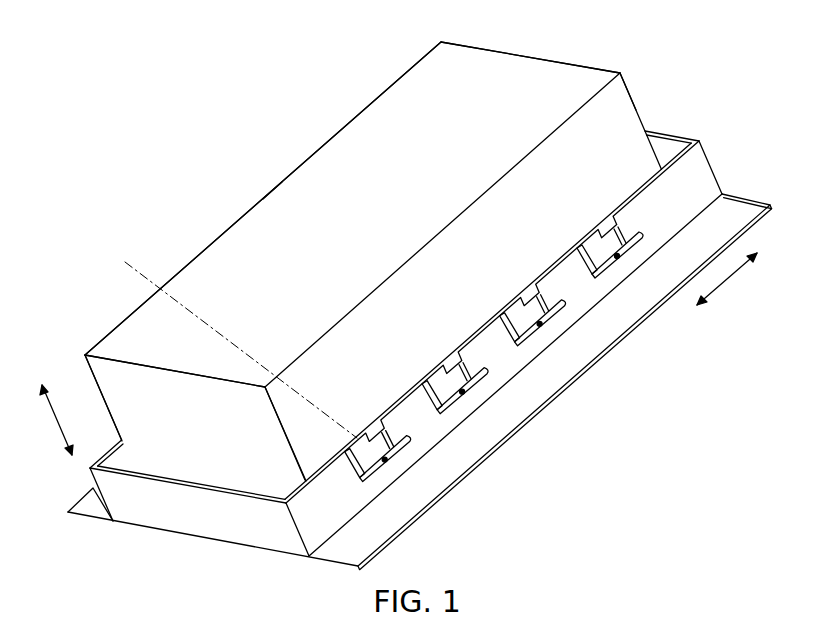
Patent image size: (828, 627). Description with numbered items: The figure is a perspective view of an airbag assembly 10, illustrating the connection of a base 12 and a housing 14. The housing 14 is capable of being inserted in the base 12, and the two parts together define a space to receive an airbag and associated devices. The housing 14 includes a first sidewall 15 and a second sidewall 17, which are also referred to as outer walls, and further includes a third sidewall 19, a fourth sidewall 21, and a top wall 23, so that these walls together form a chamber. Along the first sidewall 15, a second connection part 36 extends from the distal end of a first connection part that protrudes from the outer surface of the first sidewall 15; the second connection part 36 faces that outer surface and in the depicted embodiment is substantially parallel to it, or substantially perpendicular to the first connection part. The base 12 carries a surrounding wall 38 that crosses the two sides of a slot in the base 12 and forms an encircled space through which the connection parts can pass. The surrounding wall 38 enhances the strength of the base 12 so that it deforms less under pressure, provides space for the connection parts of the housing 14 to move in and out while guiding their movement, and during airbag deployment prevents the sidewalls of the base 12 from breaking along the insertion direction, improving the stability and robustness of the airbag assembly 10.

The airbag assembly 10 is at (228, 75).
The base 12 is at (606, 327).
The housing 14 is at (262, 257).
The first sidewall 15 is at (578, 163).
The second sidewall 17 is at (282, 181).
The third sidewall 19 is at (200, 462).
The fourth sidewall 21 is at (553, 62).
The top wall 23 is at (376, 127).
The second connection part 36 is at (480, 373).
The surrounding wall 38 is at (448, 383).